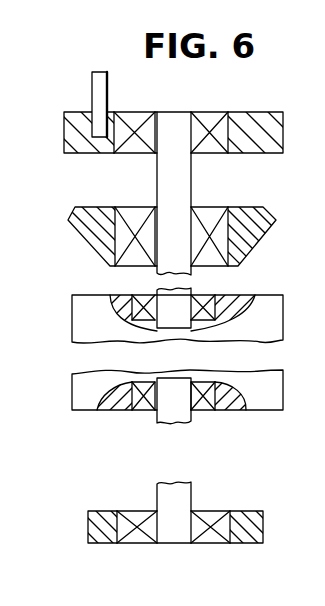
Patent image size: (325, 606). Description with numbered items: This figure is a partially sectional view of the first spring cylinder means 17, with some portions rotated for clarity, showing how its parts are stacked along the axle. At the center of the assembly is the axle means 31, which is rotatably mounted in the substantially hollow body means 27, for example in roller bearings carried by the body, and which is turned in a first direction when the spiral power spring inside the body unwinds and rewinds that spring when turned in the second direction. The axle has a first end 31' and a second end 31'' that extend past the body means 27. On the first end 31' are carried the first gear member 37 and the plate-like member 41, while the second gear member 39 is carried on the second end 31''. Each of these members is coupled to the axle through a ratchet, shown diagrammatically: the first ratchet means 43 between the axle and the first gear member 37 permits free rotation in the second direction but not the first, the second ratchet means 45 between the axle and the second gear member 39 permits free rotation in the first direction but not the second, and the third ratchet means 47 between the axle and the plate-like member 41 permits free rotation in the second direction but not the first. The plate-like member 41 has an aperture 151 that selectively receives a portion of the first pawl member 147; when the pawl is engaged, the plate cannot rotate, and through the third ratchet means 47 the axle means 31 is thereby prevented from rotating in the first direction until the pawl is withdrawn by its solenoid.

The first pawl member 147 is at (97, 87).
The aperture 151 is at (92, 119).
The plate-like member 41 is at (166, 123).
The third ratchet means 47 is at (130, 161).
The first ratchet means 43 is at (132, 197).
The first gear member 37 is at (172, 223).
The first end of axle means 31' is at (210, 193).
The body means 27 is at (142, 369).
The first spring cylinder means 17 is at (63, 421).
The axle means 31 is at (137, 432).
The second end of axle means 31'' is at (212, 505).
The second ratchet means 45 is at (135, 555).
The second gear member 39 is at (177, 552).